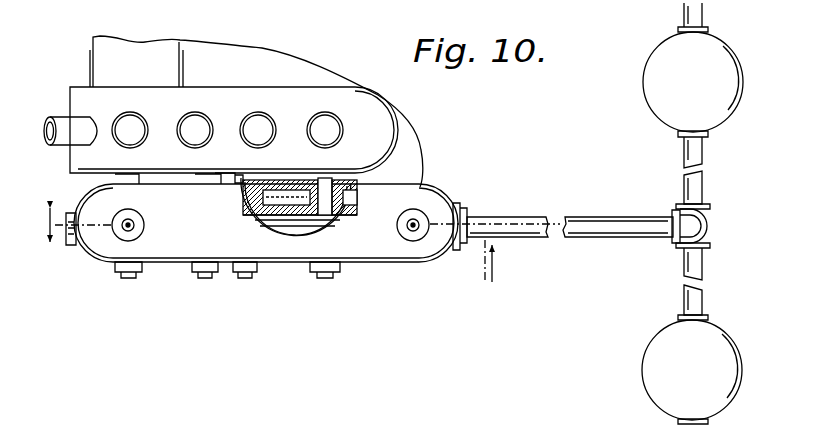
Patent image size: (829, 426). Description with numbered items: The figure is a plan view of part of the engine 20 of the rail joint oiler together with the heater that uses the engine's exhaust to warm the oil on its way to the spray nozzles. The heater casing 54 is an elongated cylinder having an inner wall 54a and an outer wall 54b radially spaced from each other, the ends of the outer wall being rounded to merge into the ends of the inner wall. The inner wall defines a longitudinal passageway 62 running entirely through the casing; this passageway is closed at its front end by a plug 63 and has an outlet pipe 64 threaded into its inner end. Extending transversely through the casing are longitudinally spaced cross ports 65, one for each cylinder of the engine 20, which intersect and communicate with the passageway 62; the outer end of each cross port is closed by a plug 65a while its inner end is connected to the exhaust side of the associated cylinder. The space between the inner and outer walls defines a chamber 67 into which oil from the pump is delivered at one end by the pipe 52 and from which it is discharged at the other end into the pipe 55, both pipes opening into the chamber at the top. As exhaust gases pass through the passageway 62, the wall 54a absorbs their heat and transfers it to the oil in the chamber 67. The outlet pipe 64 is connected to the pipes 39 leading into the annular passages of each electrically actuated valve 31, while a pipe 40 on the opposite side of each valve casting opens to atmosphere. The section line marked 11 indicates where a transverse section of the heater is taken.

The engine 20 is at (68, 97).
The heater casing 54 is at (104, 262).
The plug 63 is at (68, 240).
The pipe 52 is at (144, 225).
The pipe 55 is at (397, 225).
The section line 11 is at (291, 245).
The longitudinal passageway 62 is at (292, 226).
The outer wall 54b is at (278, 186).
The inner wall 54a is at (260, 222).
The cross port 65 is at (328, 190).
The chamber 67 is at (358, 195).
The plug 65a is at (134, 278).
The outlet pipe 64 is at (574, 209).
The pipe 39 is at (705, 158).
The electrically actuated valve 31 is at (741, 102).
The pipe 40 is at (705, 10).